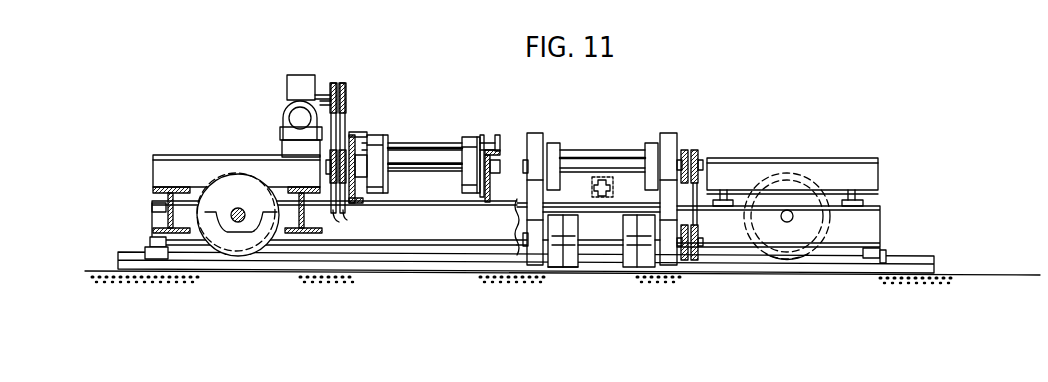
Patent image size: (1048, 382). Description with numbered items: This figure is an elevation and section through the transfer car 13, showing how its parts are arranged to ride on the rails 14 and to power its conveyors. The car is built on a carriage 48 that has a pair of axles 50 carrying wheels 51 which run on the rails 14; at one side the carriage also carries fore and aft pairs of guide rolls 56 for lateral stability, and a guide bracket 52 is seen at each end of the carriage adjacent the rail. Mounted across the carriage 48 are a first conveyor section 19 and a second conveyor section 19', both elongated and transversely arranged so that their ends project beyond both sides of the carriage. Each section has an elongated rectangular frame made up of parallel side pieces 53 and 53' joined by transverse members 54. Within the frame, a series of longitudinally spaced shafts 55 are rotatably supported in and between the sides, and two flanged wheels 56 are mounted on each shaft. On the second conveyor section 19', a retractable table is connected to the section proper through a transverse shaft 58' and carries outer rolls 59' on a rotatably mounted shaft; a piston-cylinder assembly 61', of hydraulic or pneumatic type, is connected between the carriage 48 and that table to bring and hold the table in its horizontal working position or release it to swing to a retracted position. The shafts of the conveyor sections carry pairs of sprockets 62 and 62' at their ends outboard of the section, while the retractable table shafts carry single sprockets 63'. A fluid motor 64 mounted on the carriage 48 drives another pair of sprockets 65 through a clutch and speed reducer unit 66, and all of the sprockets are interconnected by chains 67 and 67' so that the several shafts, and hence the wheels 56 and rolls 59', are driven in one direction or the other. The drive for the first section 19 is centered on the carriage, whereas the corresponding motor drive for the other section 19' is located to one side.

The transfer car 13 is at (124, 102).
The rails 14 is at (937, 267).
The first conveyor section 19 is at (428, 104).
The second conveyor section 19' is at (635, 175).
The carriage 48 is at (420, 238).
The axles 50 is at (238, 222).
The wheels 51 is at (252, 254).
The guide bracket 52 is at (160, 259).
The side pieces 53 is at (443, 147).
The side pieces 53' is at (601, 137).
The transverse members 54 is at (490, 138).
The shafts 55 is at (418, 170).
The flanged wheels 56 is at (382, 140).
The transverse shaft 58' is at (602, 144).
The outer rolls 59' is at (601, 266).
The piston-cylinder assembly 61' is at (601, 206).
The sprockets 62 is at (349, 222).
The sprockets 62' is at (547, 296).
The single sprockets 63' is at (697, 279).
The fluid motor 64 is at (286, 115).
The sprockets 65 is at (342, 85).
The clutch and speed reducer unit 66 is at (287, 83).
The chains 67 is at (368, 126).
The chains 67' is at (727, 232).